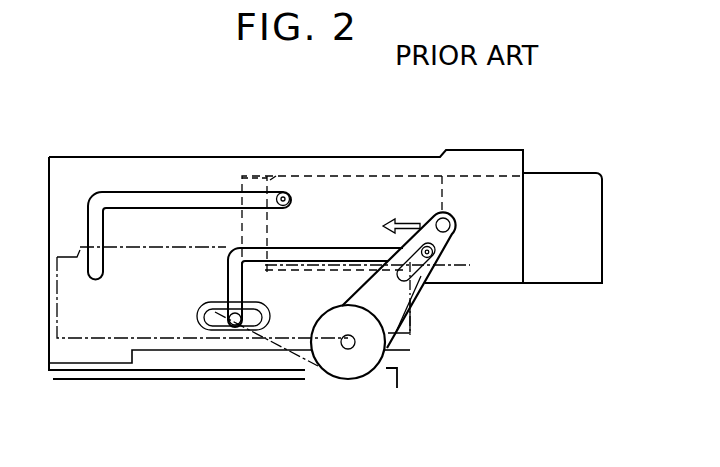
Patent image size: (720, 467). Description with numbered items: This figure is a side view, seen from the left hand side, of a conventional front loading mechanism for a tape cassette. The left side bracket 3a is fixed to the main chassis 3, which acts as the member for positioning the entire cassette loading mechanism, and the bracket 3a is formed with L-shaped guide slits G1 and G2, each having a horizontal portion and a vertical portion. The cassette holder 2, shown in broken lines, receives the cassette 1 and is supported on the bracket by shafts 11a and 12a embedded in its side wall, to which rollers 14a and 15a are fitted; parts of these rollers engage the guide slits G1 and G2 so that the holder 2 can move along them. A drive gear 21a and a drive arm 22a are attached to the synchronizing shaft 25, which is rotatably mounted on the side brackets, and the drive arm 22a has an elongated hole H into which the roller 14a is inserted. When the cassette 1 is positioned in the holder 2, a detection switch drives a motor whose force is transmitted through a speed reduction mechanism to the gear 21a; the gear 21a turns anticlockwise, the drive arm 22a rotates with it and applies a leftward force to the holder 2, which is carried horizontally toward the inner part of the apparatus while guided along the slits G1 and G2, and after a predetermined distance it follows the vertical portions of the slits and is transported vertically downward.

The cassette 1 is at (562, 172).
The cassette holder 2 is at (383, 175).
The main chassis 3 is at (240, 381).
The left side bracket 3a is at (495, 150).
The guide slit G1 is at (336, 248).
The guide slit G2 is at (168, 190).
The shaft 11a is at (272, 177).
The shaft 12a is at (432, 214).
The roller 14a is at (440, 250).
The roller 15a is at (290, 192).
The drive arm 22a is at (413, 300).
The drive gear 21a is at (352, 380).
The synchronizing shaft 25 is at (346, 350).
The elongated hole H is at (458, 236).